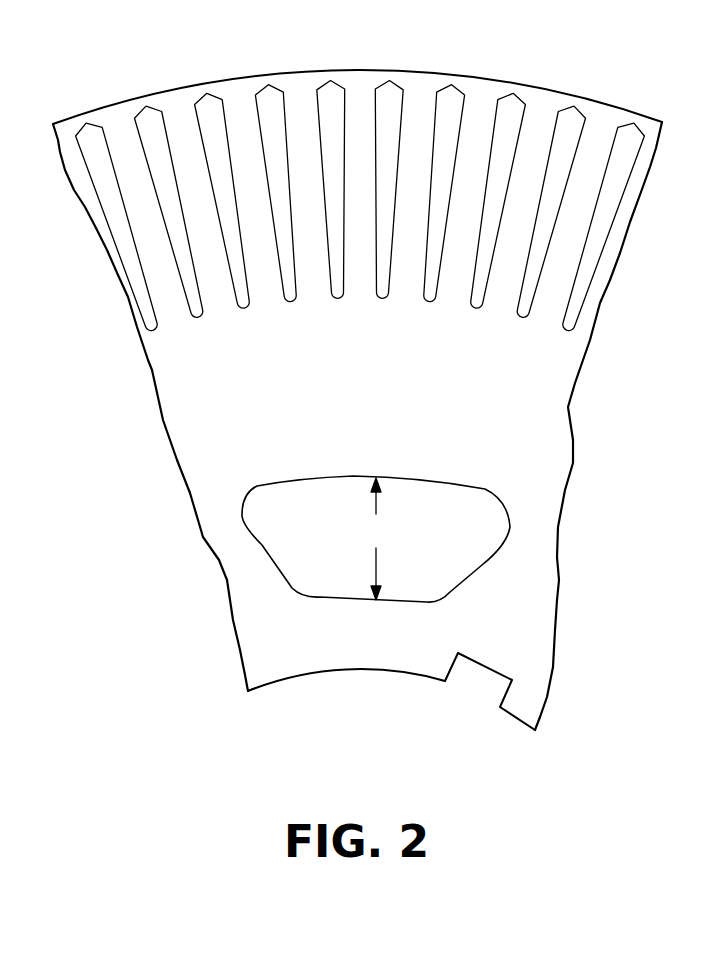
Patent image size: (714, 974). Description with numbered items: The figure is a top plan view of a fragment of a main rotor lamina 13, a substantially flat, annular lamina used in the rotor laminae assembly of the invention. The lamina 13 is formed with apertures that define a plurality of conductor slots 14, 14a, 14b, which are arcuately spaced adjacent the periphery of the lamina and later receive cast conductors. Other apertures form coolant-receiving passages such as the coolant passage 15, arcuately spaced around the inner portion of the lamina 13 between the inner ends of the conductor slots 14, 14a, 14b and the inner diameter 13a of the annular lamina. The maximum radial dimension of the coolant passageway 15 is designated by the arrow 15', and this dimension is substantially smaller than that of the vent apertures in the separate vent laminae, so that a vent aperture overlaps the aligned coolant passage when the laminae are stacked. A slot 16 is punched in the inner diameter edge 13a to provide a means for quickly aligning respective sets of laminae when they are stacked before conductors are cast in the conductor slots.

The main rotor lamina 13 is at (550, 80).
The inner diameter 13a is at (340, 668).
The conductor slot 14 is at (270, 84).
The conductor slot 14a is at (331, 81).
The conductor slot 14b is at (390, 81).
The coolant-receiving passage 15 is at (376, 518).
The arrow designating maximum radial dimension of coolant passageway 15' is at (377, 539).
The slot 16 is at (458, 658).